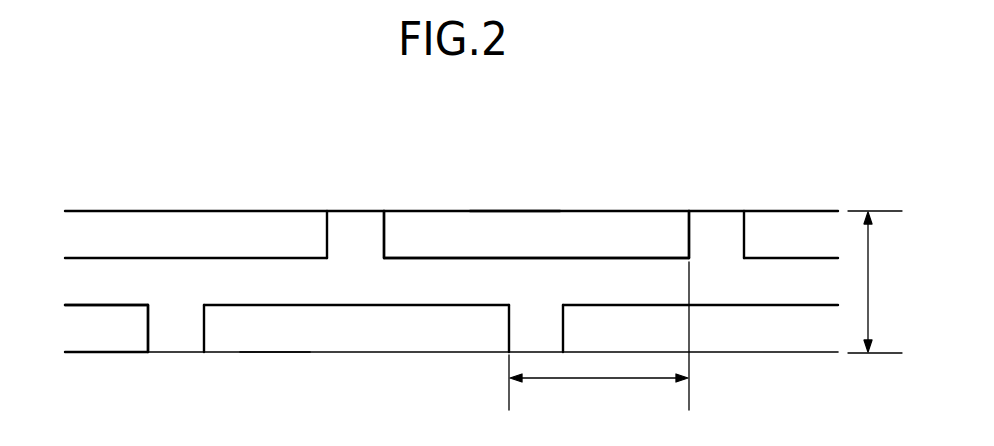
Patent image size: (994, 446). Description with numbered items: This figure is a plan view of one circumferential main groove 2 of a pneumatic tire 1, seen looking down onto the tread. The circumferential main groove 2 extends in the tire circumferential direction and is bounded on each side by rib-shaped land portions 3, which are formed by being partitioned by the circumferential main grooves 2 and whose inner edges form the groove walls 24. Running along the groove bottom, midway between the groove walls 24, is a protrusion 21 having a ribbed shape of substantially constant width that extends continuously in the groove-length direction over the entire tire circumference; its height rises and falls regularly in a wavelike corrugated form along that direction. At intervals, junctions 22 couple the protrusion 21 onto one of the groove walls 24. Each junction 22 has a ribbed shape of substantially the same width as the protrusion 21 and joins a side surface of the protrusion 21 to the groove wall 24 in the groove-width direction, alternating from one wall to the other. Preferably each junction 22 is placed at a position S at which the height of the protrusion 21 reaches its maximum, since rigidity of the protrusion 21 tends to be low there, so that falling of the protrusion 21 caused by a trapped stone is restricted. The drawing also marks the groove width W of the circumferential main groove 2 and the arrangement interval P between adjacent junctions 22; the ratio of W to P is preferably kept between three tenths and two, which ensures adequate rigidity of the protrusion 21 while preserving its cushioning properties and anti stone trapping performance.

The pneumatic tire 1 is at (842, 134).
The circumferential main groove 2 is at (78, 324).
The land portion 3 is at (80, 191).
The protrusion 21 is at (436, 272).
The junction 22 is at (353, 240).
The groove wall 24 is at (499, 209).
The position at which the height of the protrusion reaches its maximum S is at (173, 270).
The groove width W is at (875, 282).
The arrangement interval P is at (599, 336).